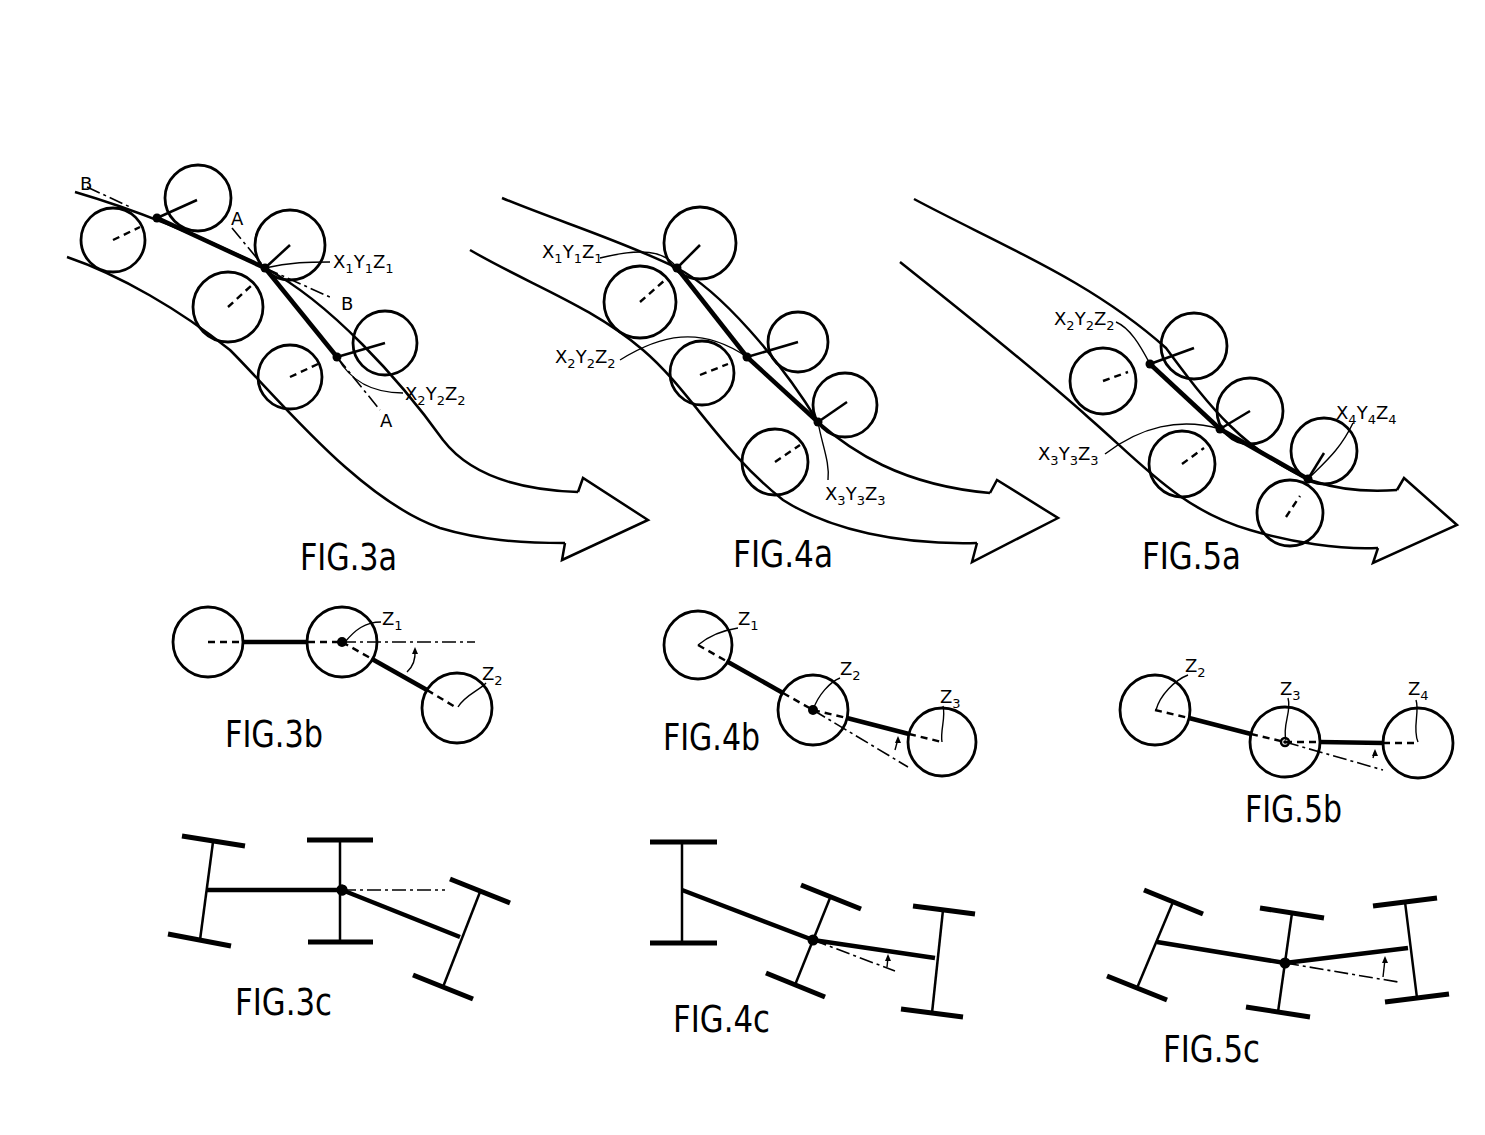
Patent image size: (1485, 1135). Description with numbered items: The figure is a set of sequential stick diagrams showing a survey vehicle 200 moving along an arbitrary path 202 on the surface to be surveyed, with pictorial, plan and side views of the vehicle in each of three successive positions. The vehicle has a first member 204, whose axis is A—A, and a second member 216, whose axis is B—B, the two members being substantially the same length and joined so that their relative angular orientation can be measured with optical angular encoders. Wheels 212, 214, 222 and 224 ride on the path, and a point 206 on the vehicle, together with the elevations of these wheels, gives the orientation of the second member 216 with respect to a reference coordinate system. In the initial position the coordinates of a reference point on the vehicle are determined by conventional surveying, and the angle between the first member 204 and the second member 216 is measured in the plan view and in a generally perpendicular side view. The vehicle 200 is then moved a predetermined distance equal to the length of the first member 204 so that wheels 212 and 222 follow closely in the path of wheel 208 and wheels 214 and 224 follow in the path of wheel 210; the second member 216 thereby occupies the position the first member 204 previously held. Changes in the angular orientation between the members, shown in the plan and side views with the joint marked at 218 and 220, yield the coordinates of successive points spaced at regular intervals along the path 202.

In FIG. 3A, the survey vehicle 200 is at (322, 219).
In FIG. 4A, the survey vehicle 200 is at (713, 204).
In FIG. 5A, the survey vehicle 200 is at (1189, 307).
In FIG. 3A, the path 202 is at (452, 457).
In FIG. 4A, the path 202 is at (910, 483).
In FIG. 5A, the path 202 is at (1373, 497).
In FIG. 3A, the first member 204 is at (287, 304).
In FIG. 4A, the first member 204 is at (782, 395).
In FIG. 5A, the first member 204 is at (1258, 453).
In FIG. 3B, the first member 204 is at (400, 688).
In FIG. 4B, the first member 204 is at (875, 720).
In FIG. 5B, the first member 204 is at (1338, 740).
In FIG. 3C, the first member 204 is at (417, 921).
In FIG. 4C, the first member 204 is at (875, 948).
In FIG. 5C, the first member 204 is at (1340, 955).
In FIG. 3A, the point 206 is at (265, 268).
In FIG. 3C, the point 206 is at (345, 888).
In FIG. 3A, the wheel 208 is at (399, 326).
In FIG. 4A, the wheel 208 is at (850, 372).
In FIG. 5A, the wheel 208 is at (1310, 420).
In FIG. 3A, the wheel 210 is at (260, 372).
In FIG. 4A, the wheel 210 is at (743, 460).
In FIG. 5A, the wheel 210 is at (1324, 524).
In FIG. 3A, the wheel 212 is at (285, 210).
In FIG. 4A, the wheel 212 is at (799, 310).
In FIG. 5A, the wheel 212 is at (1255, 380).
In FIG. 3A, the wheel 214 is at (198, 318).
In FIG. 4A, the wheel 214 is at (670, 380).
In FIG. 5A, the wheel 214 is at (1152, 479).
In FIG. 3A, the second member 216 is at (210, 246).
In FIG. 4A, the second member 216 is at (720, 310).
In FIG. 5A, the second member 216 is at (1178, 396).
In FIG. 3B, the second member 216 is at (265, 640).
In FIG. 4B, the second member 216 is at (762, 678).
In FIG. 5B, the second member 216 is at (1206, 717).
In FIG. 3C, the second member 216 is at (280, 888).
In FIG. 4C, the second member 216 is at (740, 911).
In FIG. 5C, the second member 216 is at (1235, 955).
In FIG. 5B, the pivot pin 218 is at (1280, 745).
In FIG. 3C, the pivot point 220 is at (338, 893).
In FIG. 4C, the pivot point 220 is at (810, 941).
In FIG. 5C, the pivot point 220 is at (1283, 965).
In FIG. 3A, the wheel 222 is at (208, 179).
In FIG. 4A, the wheel 222 is at (723, 230).
In FIG. 5A, the wheel 222 is at (1204, 318).
In FIG. 3A, the wheel 224 is at (108, 270).
In FIG. 4A, the wheel 224 is at (604, 318).
In FIG. 5A, the wheel 224 is at (1070, 381).